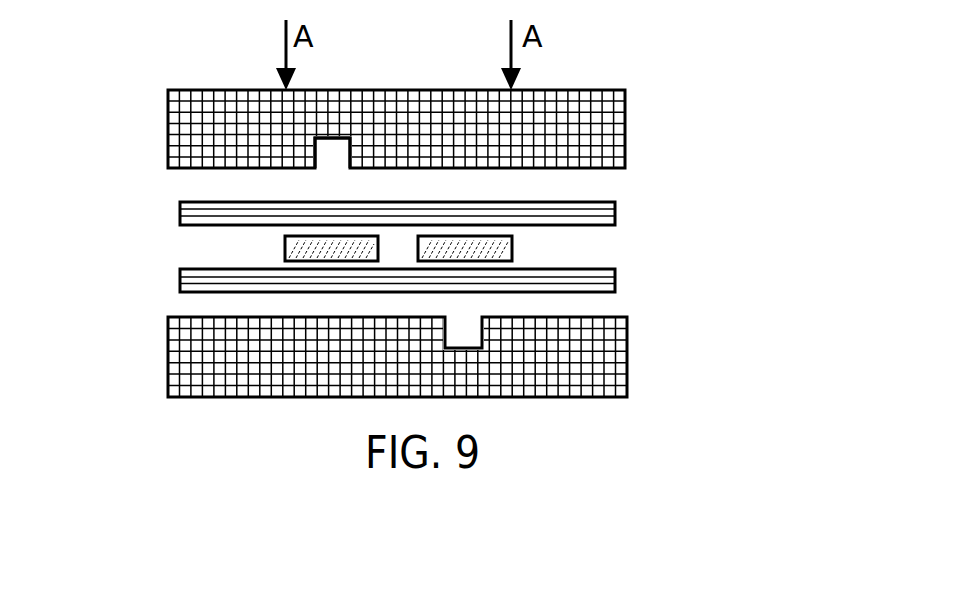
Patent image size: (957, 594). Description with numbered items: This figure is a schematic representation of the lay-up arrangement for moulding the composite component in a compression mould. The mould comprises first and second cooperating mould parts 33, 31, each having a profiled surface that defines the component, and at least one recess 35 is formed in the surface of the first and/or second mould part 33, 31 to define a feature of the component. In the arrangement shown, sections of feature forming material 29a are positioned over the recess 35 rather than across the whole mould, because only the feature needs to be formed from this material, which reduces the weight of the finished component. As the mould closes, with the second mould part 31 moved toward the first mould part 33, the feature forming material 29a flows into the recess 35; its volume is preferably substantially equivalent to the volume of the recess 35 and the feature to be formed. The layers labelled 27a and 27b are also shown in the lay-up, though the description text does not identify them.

The upper heater plate 27a is at (580, 120).
The lower planar member 27b is at (197, 292).
The feature forming material 29a is at (300, 255).
The second mould part 31 is at (205, 218).
The first mould part 33 is at (597, 363).
The recess 35 is at (330, 163).